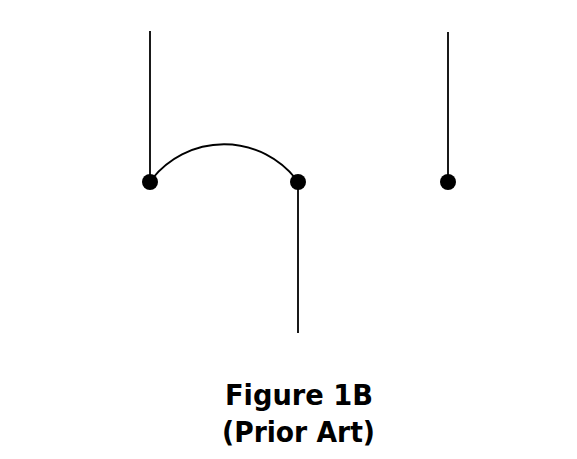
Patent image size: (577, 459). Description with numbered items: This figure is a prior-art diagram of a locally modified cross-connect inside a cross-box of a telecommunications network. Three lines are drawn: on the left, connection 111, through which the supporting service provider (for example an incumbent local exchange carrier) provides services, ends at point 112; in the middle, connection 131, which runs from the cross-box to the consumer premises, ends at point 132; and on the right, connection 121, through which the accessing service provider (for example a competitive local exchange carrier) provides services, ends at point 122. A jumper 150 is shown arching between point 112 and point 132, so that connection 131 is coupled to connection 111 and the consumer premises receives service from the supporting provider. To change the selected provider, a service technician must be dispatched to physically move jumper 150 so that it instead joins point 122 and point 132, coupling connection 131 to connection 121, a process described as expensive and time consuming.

The connection 111 is at (150, 125).
The point 112 is at (149, 175).
The jumper 150 is at (224, 143).
The point 132 is at (302, 175).
The connection 131 is at (298, 263).
The connection 121 is at (448, 106).
The point 122 is at (450, 174).